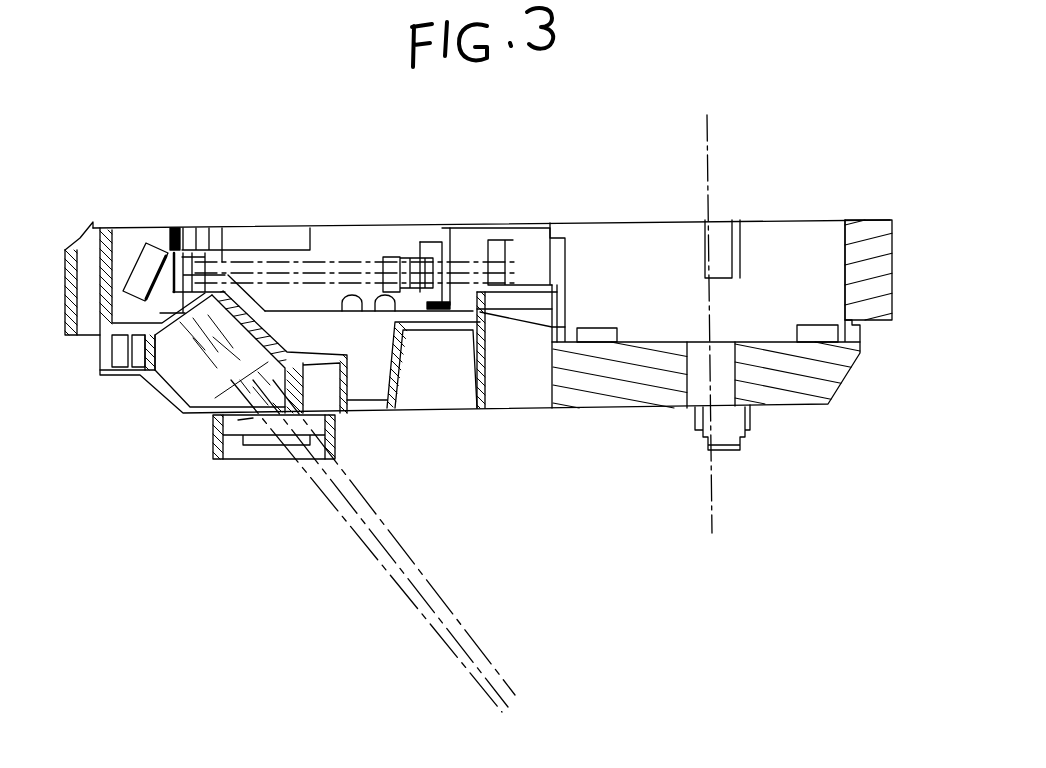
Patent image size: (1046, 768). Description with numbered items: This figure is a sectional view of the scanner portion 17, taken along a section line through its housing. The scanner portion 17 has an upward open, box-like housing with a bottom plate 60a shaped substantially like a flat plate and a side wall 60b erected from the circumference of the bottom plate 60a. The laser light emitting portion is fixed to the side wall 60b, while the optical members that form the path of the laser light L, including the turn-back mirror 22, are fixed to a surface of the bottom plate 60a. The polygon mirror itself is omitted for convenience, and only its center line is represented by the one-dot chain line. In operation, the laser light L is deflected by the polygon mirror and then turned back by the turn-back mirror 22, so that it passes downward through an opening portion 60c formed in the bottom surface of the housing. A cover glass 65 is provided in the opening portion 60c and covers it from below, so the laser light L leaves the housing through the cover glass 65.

The scanner portion 17 is at (602, 172).
The turn-back mirror 22 is at (146, 262).
The bottom plate 60a is at (528, 310).
The side wall 60b is at (870, 218).
The opening portion 60c is at (245, 418).
The cover glass 65 is at (240, 428).
The laser light L is at (352, 496).